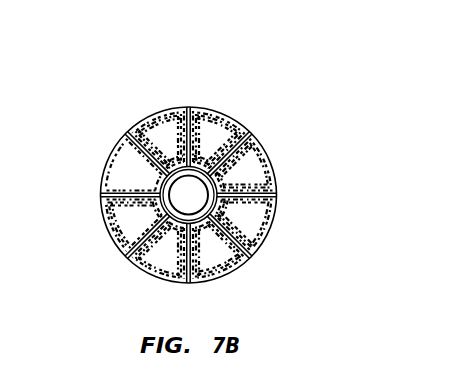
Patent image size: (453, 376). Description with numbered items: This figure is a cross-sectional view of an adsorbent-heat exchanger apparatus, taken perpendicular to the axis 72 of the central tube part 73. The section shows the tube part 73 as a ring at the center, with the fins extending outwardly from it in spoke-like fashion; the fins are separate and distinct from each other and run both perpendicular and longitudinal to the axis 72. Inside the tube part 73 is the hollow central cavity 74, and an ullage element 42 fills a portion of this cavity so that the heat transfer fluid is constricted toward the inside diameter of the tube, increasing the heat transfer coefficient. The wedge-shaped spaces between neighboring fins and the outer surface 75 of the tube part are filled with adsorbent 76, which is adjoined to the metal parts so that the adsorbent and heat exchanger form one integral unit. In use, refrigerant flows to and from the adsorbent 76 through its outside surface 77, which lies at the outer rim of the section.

The ullage element 42 is at (198, 192).
The axis 72 is at (190, 193).
The tube part 73 is at (203, 167).
The hollow central cavity 74 is at (157, 226).
The outer surface 75 is at (198, 218).
The adsorbent 76 is at (188, 108).
The outside surface 77 is at (151, 140).